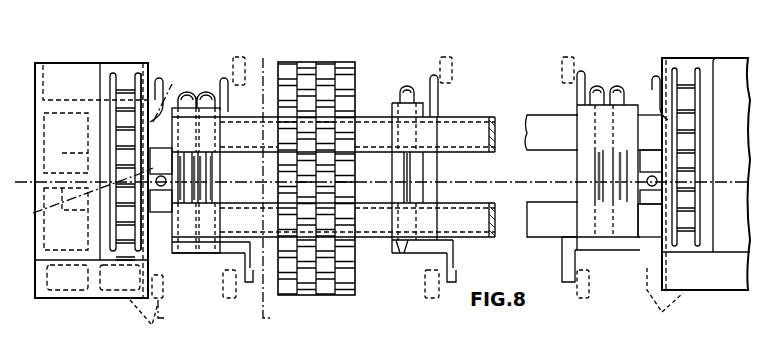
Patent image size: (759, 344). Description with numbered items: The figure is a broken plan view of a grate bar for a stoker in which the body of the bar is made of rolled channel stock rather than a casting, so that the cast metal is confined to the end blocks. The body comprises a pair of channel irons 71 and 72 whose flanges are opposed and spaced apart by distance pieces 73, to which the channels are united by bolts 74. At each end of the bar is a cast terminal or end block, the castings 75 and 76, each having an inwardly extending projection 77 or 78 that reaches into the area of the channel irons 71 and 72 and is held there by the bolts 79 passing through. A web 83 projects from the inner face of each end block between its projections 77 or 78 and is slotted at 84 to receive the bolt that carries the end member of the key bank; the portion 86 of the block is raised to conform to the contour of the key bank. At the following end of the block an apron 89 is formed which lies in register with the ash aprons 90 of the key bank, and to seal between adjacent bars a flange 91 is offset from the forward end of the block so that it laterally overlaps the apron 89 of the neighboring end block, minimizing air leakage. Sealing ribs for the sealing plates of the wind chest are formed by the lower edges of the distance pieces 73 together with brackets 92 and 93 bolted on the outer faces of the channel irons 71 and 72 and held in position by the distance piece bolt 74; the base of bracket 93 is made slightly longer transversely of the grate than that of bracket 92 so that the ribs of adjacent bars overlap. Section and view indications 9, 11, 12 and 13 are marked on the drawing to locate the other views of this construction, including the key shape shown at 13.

The section line 9- 9 is at (33, 206).
The section line 11- 11 is at (112, 336).
The section line 12- 12 is at (172, 84).
The section line 13- 13 is at (273, 318).
The channel iron 71 is at (482, 122).
The channel iron 72 is at (496, 238).
The distance piece 73 is at (436, 170).
The bolt 74 is at (410, 92).
The casting 75 is at (38, 151).
The casting 76 is at (706, 174).
The projection 77 is at (186, 255).
The projection 78 is at (654, 240).
The bolt 79 is at (197, 96).
The web 83 is at (165, 178).
The slot 84 is at (166, 180).
The raised portion 86 is at (104, 340).
The apron 89 is at (36, 277).
The ash apron 90 is at (333, 292).
The flange 91 is at (161, 80).
The bracket 92 is at (229, 104).
The bracket 93 is at (562, 270).